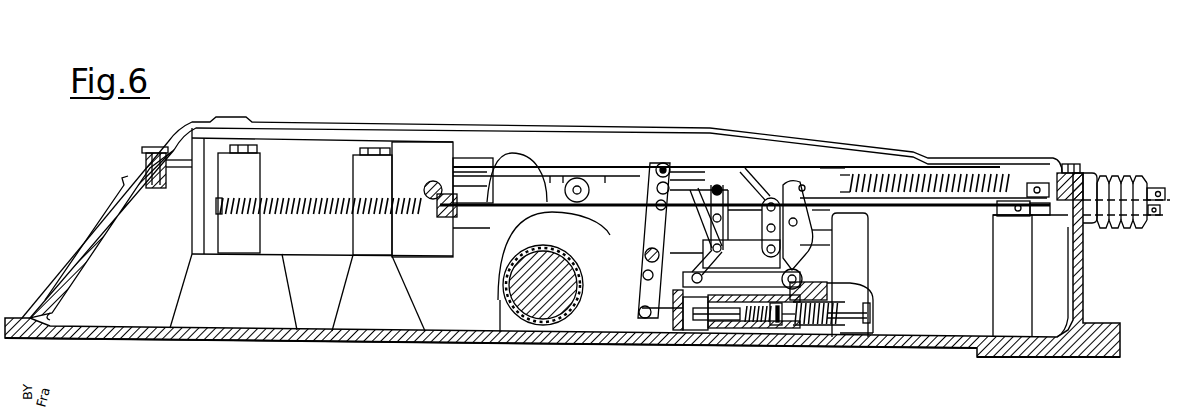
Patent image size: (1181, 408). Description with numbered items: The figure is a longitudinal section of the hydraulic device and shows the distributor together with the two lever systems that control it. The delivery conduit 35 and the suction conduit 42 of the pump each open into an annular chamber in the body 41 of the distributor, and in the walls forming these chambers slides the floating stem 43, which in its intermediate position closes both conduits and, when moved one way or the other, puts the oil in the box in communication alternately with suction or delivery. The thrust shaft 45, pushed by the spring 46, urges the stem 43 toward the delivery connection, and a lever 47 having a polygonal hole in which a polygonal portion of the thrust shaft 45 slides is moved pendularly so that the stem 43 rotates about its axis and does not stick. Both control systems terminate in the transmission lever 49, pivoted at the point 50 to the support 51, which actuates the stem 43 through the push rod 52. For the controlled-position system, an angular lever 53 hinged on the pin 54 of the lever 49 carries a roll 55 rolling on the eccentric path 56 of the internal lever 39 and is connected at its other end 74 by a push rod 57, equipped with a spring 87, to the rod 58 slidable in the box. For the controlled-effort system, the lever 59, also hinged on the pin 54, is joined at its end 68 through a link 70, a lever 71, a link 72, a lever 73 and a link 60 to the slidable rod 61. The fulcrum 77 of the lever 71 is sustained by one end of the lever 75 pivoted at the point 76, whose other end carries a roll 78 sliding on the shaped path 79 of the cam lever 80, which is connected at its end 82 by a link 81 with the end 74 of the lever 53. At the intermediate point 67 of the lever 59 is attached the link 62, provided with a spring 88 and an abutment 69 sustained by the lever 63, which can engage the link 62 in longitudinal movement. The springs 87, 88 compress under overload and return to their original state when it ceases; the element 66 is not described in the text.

The delivery conduit 35 is at (772, 326).
The internal lever 39 is at (505, 292).
The distributor body 41 is at (730, 322).
The suction conduit 42 is at (710, 326).
The floating stem 43 is at (756, 324).
The thrust shaft 45 is at (848, 326).
The spring 46 is at (856, 350).
The lever 47 is at (913, 350).
The transmission lever 49 is at (647, 281).
The pivot point 50 is at (650, 258).
The support 51 is at (680, 285).
The push rod 52 is at (698, 312).
The angular lever 53 is at (578, 166).
The pin 54 is at (640, 280).
The roll 55 is at (546, 178).
The eccentric path 56 is at (572, 225).
The push rod 57 is at (808, 232).
The rod 58 is at (1159, 188).
The lever 59 is at (573, 180).
The link 60 is at (980, 202).
The rod 61 is at (1152, 216).
The link 62 is at (513, 203).
The lever 63 is at (447, 218).
The link 66 is at (736, 190).
The intermediate point 67 is at (658, 186).
The end 68 is at (660, 168).
The abutment 69 is at (428, 188).
The link 70 is at (703, 186).
The lever 71 is at (717, 210).
The link 72 is at (774, 206).
The lever 73 is at (798, 222).
The end 74 is at (690, 196).
The lever 75 is at (810, 328).
The pivot point 76 is at (680, 330).
The fulcrum 77 is at (712, 186).
The roll 78 is at (880, 194).
The shaped path 79 is at (830, 215).
The cam lever 80 is at (806, 278).
The link 81 is at (752, 195).
The end 82 is at (803, 248).
The spring 87 is at (972, 176).
The spring 88 is at (282, 203).